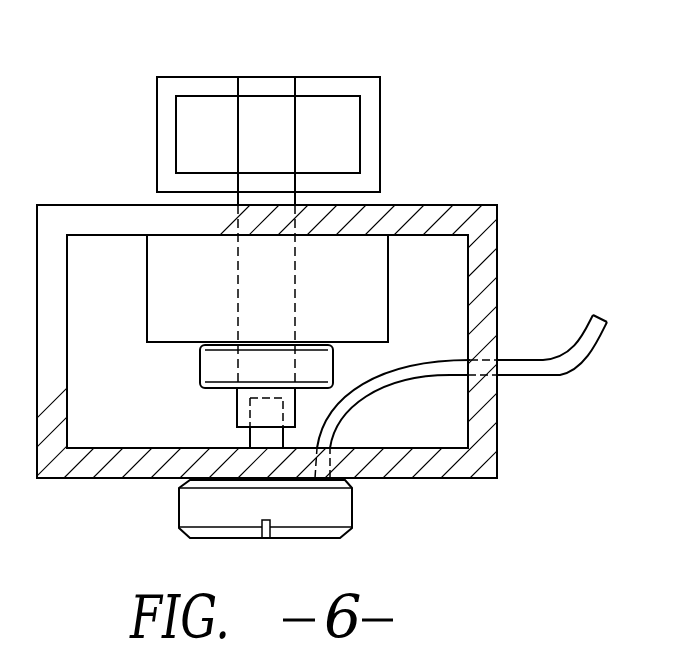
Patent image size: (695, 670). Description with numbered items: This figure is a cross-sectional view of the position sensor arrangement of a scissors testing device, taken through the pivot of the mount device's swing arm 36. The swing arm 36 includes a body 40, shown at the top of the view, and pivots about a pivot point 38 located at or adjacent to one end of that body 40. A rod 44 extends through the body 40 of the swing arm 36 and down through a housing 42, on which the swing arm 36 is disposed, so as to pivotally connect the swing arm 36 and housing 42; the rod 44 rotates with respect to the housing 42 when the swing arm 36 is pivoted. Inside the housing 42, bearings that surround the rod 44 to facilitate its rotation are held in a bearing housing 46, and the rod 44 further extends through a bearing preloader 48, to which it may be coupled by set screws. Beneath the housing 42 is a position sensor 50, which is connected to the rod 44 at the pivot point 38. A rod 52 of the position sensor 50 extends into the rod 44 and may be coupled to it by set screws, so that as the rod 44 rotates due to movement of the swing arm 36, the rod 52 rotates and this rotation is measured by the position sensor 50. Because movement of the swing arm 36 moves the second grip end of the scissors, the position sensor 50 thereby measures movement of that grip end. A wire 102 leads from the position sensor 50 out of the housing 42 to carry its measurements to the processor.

The swing arm 36 is at (266, 104).
The pivot point 38 is at (265, 192).
The body 40 is at (202, 77).
The housing 42 is at (497, 262).
The rod 44 is at (297, 200).
The bearing housing 46 is at (147, 268).
The bearing preloader 48 is at (200, 364).
The position sensor 50 is at (355, 505).
The rod 52 is at (248, 435).
The wire 102 is at (560, 372).